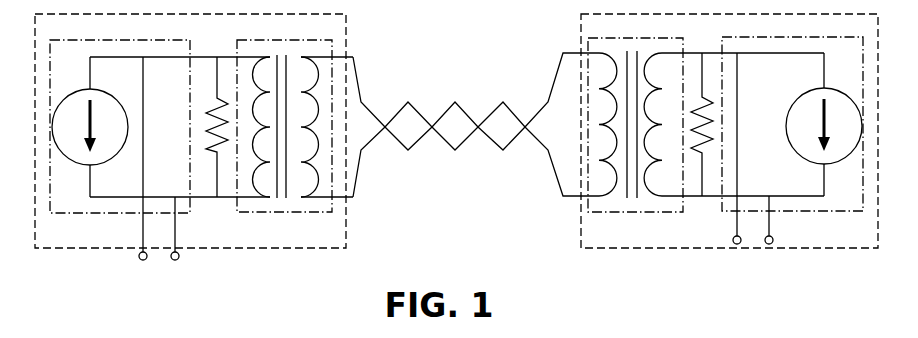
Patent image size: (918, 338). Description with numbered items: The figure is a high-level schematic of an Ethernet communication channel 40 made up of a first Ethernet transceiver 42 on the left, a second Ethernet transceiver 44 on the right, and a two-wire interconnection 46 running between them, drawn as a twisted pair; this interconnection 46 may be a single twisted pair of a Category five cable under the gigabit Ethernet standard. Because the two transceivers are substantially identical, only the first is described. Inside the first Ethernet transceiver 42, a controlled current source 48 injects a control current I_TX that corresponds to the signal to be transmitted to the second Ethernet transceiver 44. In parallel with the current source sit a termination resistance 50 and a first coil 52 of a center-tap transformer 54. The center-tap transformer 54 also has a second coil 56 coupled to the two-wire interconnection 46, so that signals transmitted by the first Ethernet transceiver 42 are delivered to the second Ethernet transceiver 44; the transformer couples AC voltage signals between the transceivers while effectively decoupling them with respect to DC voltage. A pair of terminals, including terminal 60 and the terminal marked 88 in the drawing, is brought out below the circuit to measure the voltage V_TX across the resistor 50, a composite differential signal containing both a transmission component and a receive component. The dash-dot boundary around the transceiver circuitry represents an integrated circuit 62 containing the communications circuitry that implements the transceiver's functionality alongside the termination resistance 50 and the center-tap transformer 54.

The Ethernet communication channel 40 is at (460, 52).
The first Ethernet transceiver 42 is at (346, 35).
The second Ethernet transceiver 44 is at (573, 38).
The two-wire interconnection 46 is at (408, 151).
The controlled current source 48 is at (88, 89).
The termination resistance 50 is at (216, 68).
The first coil 52 is at (265, 62).
The center-tap transformer 54 is at (250, 213).
The second coil 56 is at (303, 198).
The terminal 60 is at (180, 257).
The integrated circuit 62 is at (190, 201).
The positive output terminal 88 is at (139, 257).